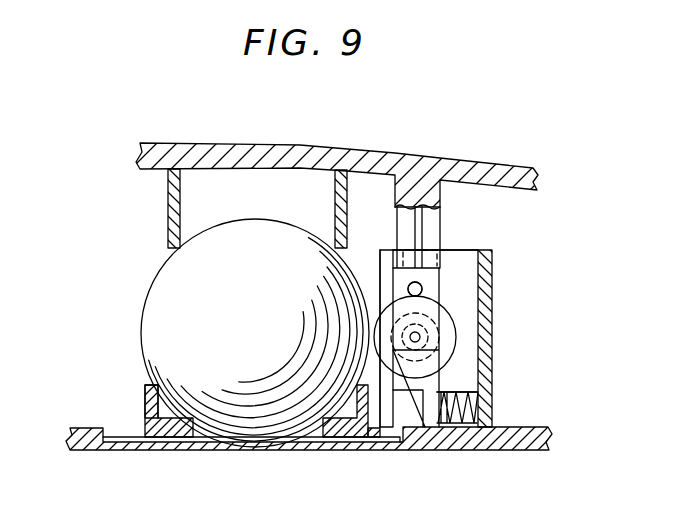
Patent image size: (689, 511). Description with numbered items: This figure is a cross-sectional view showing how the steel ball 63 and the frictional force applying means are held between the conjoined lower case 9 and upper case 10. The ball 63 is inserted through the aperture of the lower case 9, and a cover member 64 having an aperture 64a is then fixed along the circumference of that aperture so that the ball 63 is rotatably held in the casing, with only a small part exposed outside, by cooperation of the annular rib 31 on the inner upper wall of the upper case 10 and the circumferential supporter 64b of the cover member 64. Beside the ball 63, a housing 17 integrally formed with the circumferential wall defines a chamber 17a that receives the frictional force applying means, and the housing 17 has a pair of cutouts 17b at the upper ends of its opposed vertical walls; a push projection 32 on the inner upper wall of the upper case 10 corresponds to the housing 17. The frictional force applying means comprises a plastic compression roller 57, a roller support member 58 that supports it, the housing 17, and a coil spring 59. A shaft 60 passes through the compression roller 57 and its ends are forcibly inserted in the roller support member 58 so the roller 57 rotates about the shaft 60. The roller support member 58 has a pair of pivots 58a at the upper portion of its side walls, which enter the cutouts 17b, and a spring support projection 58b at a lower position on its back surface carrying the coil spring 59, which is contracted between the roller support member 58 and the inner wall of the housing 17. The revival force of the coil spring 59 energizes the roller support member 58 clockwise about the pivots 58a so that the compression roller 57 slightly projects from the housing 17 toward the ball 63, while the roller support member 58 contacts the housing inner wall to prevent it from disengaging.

The lower case 9 is at (525, 445).
The upper case 10 is at (357, 147).
The housing 17 is at (475, 250).
The chamber 17a is at (460, 265).
The cutouts 17b is at (445, 258).
The annular rib 31 is at (170, 212).
The push projection 32 is at (442, 216).
The compression roller 57 is at (457, 337).
The roller support member 58 is at (425, 294).
The pivots 58a is at (420, 286).
The spring support projection 58b is at (462, 388).
The coil spring 59 is at (470, 426).
The shaft 60 is at (430, 328).
The ball 63 is at (160, 272).
The cover member 64 is at (171, 440).
The aperture 64a is at (322, 440).
The circumferential supporter 64b is at (150, 392).